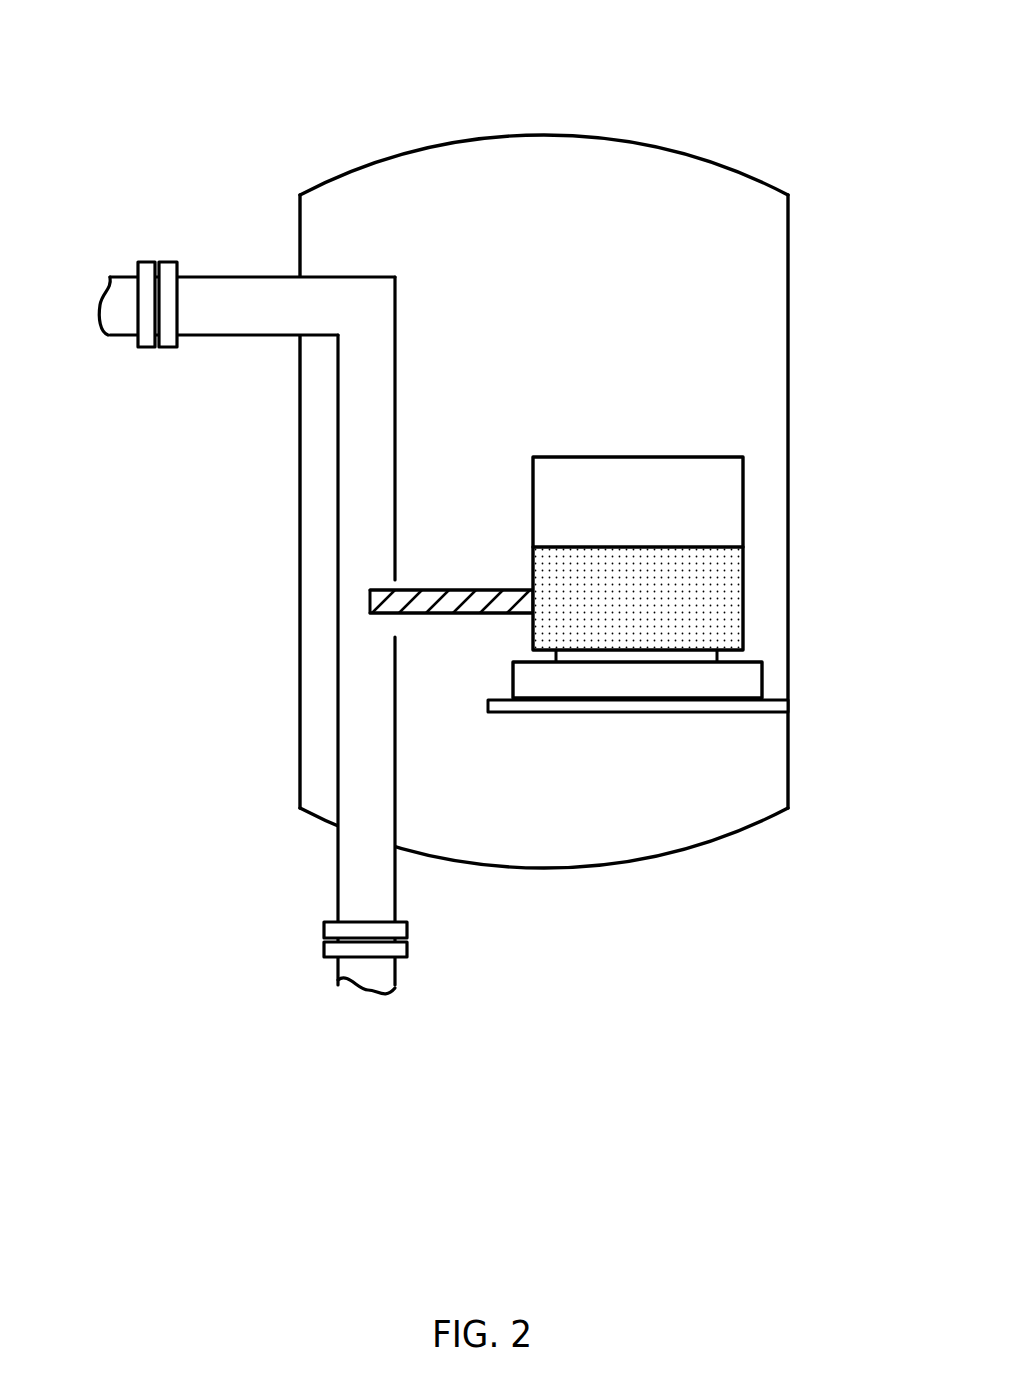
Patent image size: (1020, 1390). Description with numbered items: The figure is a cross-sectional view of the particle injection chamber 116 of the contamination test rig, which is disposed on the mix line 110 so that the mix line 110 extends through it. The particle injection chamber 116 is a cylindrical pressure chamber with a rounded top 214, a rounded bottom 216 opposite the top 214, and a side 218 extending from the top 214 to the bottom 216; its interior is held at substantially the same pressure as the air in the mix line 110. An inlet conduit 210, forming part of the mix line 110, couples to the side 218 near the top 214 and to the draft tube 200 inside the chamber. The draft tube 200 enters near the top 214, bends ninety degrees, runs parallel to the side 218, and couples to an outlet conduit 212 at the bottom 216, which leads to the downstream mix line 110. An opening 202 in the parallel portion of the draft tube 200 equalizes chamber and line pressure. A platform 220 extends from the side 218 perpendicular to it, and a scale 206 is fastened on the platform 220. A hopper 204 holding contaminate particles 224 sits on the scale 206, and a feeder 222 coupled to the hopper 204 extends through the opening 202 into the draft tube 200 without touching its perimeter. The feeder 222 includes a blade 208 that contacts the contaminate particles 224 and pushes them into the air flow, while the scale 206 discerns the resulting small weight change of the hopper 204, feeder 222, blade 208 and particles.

The mix line 110 is at (100, 262).
The particle injection chamber 116 is at (512, 490).
The draft tube 200 is at (338, 485).
The opening 202 is at (400, 588).
The hopper 204 is at (743, 514).
The scale 206 is at (762, 673).
The blade 208 is at (403, 613).
The inlet conduit 210 is at (240, 277).
The outlet conduit 212 is at (395, 878).
The top 214 is at (540, 133).
The bottom 216 is at (537, 870).
The side 218 is at (297, 587).
The platform 220 is at (732, 713).
The feeder 222 is at (457, 613).
The contaminate particles 224 is at (713, 628).